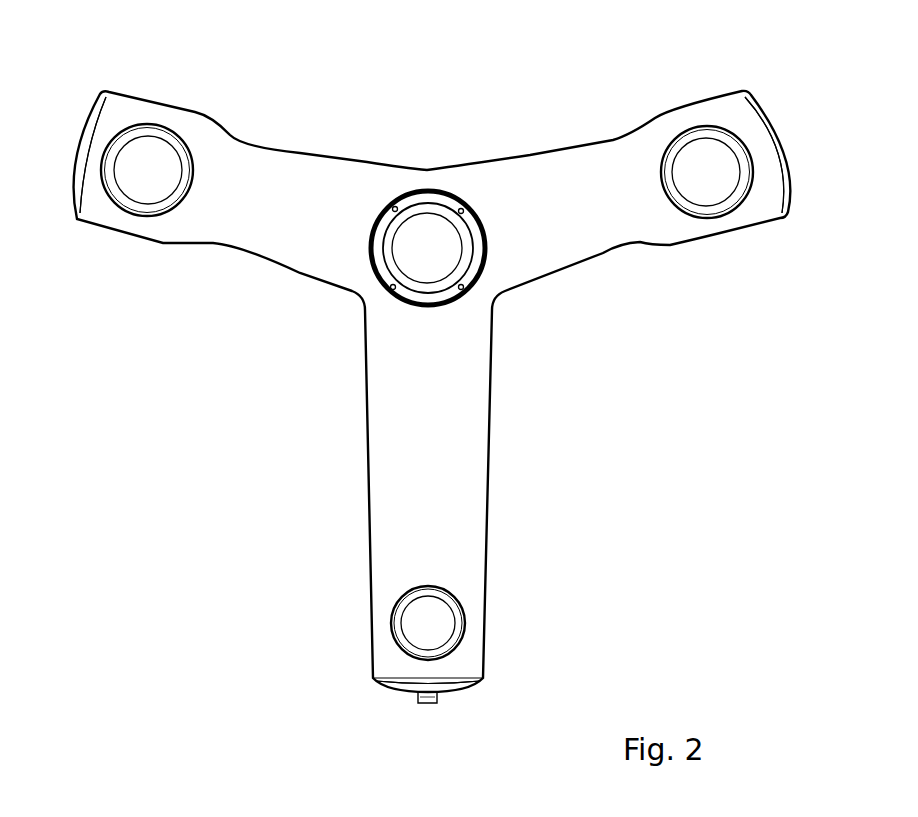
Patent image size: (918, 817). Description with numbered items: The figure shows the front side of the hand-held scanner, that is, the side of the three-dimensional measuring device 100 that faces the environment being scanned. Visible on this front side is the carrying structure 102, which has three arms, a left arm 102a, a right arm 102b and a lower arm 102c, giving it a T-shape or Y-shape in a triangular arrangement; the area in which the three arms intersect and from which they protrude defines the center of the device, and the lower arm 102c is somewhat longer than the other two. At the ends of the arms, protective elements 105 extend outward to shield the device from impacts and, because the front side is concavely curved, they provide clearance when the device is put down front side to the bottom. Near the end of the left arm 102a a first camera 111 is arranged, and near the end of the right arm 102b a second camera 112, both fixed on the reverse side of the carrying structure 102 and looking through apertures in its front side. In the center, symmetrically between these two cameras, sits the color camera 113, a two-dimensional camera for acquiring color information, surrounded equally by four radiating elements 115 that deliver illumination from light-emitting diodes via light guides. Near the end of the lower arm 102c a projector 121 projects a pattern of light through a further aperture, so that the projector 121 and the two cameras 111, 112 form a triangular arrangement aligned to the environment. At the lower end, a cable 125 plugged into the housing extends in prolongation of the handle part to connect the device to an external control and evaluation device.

The 3D measuring device 100 is at (450, 396).
The carrying structure 102 is at (491, 456).
The left arm 102a is at (650, 235).
The right arm 102b is at (210, 233).
The lower arm 102c is at (378, 548).
The protective elements 105 is at (93, 107).
The first camera 111 is at (707, 172).
The second camera 112 is at (150, 172).
The color camera 113 is at (429, 248).
The radiating elements 115 is at (395, 209).
The projector 121 is at (430, 628).
The cable 125 is at (417, 700).